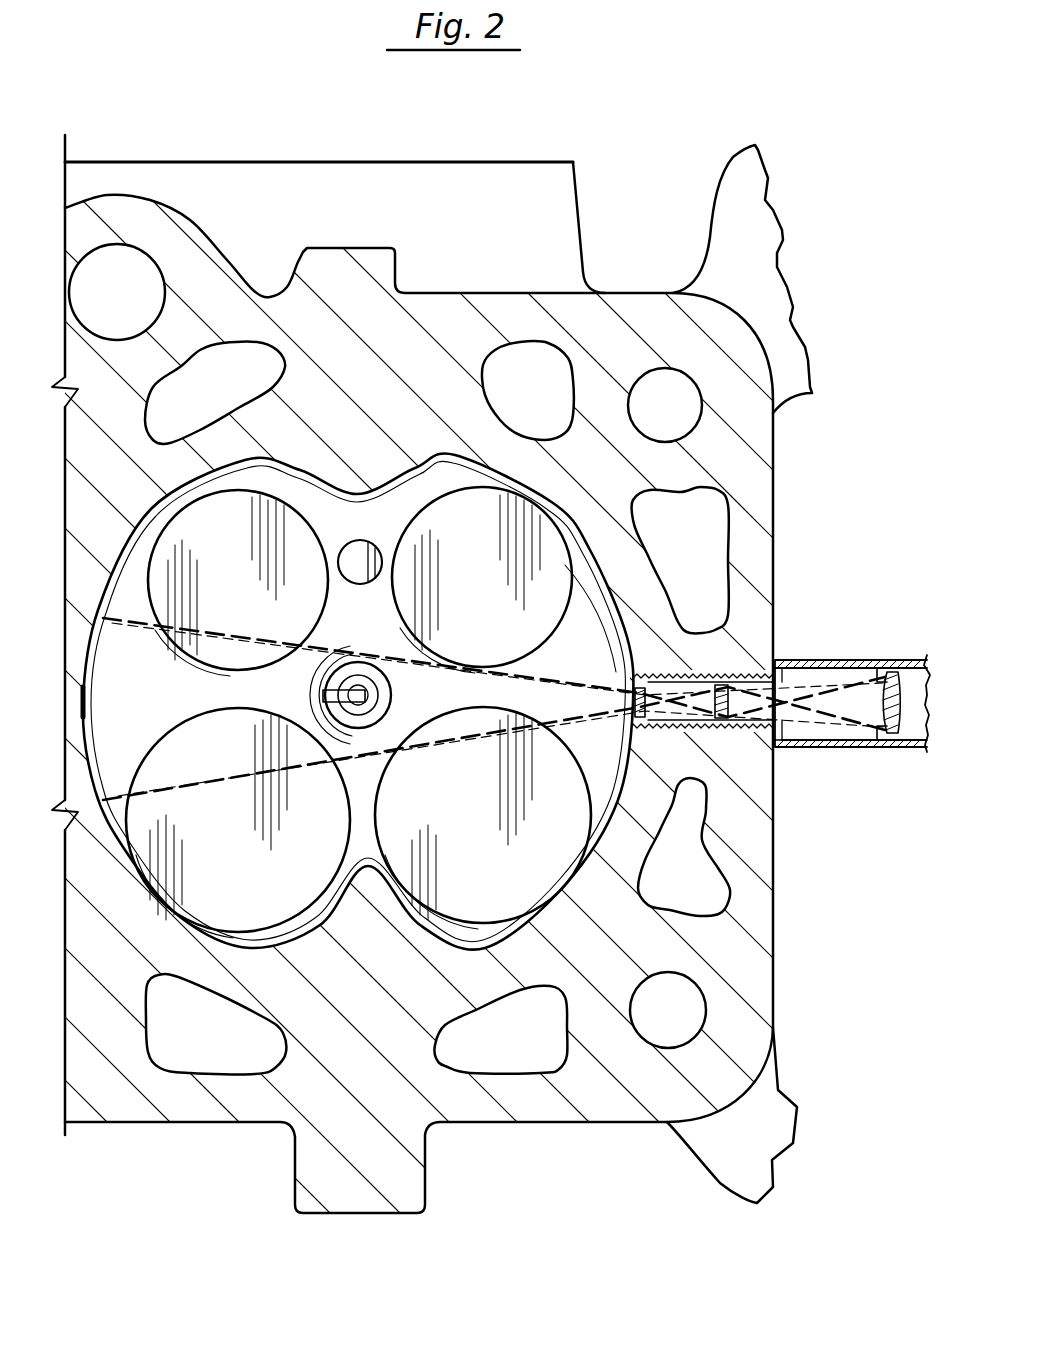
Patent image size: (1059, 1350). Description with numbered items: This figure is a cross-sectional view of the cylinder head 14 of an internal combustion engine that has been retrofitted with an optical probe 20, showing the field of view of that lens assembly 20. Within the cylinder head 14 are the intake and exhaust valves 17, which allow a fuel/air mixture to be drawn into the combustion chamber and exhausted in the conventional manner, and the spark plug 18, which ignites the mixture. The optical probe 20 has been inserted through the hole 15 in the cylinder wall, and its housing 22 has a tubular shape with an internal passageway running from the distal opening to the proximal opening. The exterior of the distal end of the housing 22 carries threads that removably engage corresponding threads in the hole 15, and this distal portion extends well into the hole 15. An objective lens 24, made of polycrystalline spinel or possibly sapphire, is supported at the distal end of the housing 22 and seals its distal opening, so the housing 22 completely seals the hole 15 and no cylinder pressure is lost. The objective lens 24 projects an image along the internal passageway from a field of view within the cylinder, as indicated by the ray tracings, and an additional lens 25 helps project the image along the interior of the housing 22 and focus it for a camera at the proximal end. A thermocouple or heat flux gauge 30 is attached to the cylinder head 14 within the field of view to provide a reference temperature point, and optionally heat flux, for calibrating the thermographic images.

The cylinder head 14 is at (200, 705).
The hole 15 is at (729, 672).
The intake and exhaust valves 17 is at (227, 562).
The spark plug 18 is at (312, 680).
The optical probe 20 is at (845, 633).
The optical housing 22 is at (800, 750).
The objective lens 24 is at (688, 740).
The additional lens 25 is at (867, 748).
The thermocouples or heat flux gauges 30 is at (87, 703).